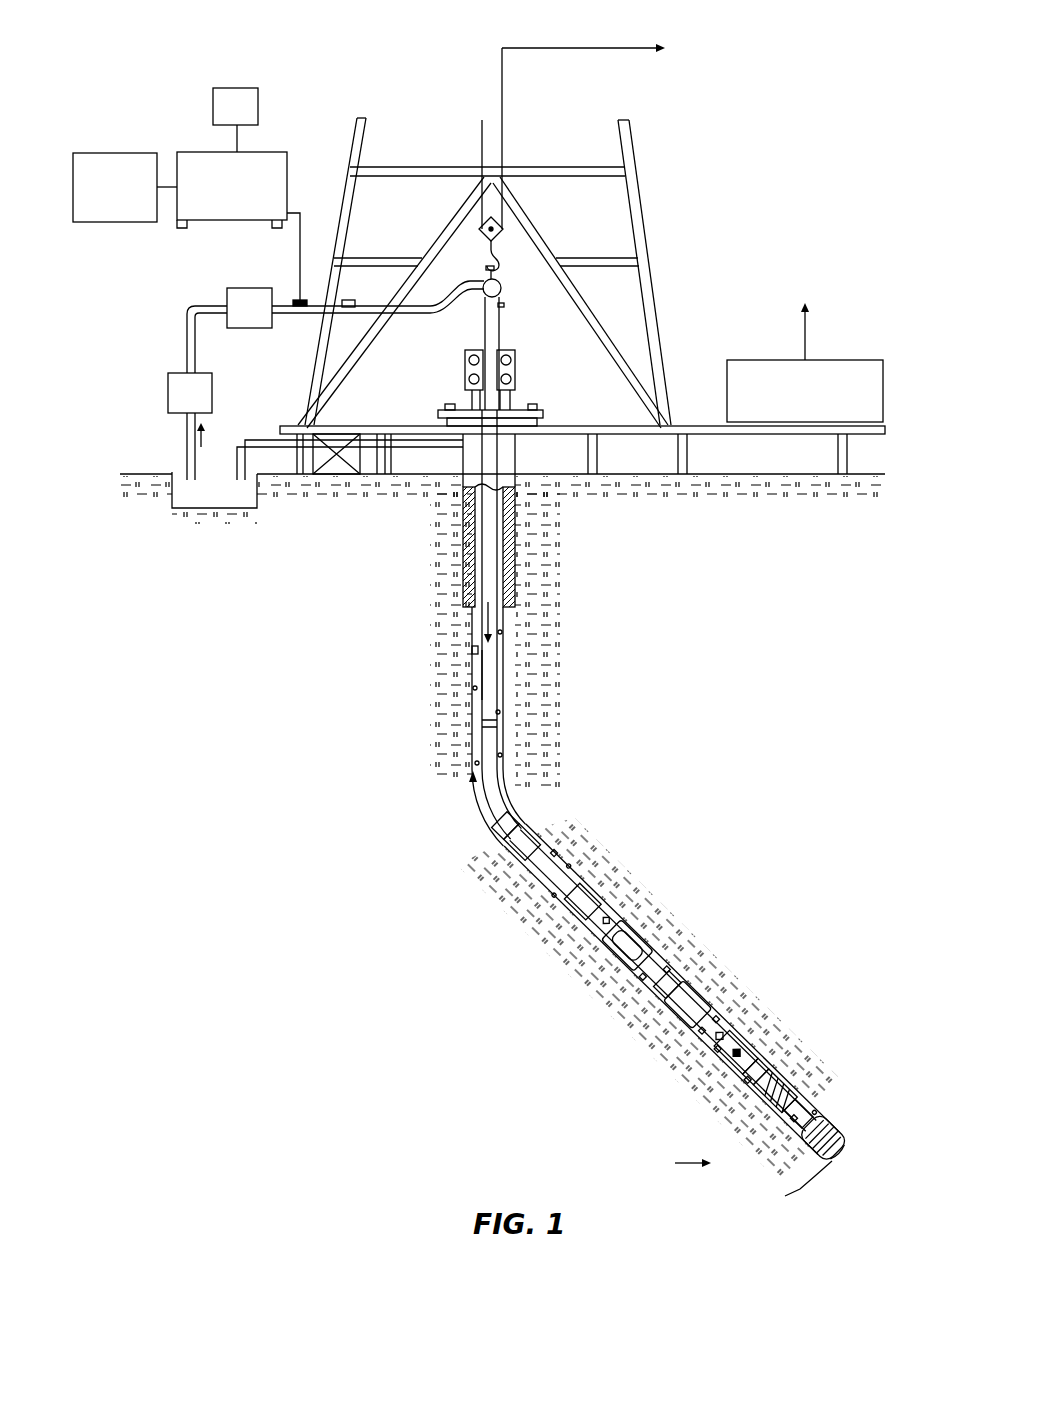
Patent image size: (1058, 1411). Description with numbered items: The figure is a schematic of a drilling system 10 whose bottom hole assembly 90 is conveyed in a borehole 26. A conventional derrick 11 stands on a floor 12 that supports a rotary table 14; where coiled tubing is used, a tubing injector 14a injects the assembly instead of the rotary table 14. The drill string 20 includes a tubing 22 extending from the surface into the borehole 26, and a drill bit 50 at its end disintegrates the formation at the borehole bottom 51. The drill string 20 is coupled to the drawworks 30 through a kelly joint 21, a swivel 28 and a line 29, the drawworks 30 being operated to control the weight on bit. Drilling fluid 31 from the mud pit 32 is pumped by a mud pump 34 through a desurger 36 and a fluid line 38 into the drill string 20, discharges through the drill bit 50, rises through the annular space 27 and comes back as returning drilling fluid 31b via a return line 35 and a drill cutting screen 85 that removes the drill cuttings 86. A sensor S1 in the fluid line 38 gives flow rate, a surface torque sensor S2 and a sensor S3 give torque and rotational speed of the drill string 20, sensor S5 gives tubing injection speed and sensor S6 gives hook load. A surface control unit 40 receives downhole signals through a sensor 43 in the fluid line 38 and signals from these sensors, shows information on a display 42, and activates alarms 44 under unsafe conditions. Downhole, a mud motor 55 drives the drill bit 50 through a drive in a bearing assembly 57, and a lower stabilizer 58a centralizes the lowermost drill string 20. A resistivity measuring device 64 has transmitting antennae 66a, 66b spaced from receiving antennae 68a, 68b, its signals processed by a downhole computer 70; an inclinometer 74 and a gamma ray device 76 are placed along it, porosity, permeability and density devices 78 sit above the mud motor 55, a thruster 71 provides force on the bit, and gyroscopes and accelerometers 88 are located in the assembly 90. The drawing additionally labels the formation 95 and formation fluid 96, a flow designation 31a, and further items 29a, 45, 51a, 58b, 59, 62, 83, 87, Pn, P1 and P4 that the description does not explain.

The drilling system 10 is at (424, 59).
The derrick 11 is at (650, 273).
The floor 12 is at (683, 427).
The rotary table 14 is at (515, 408).
The tubing injector 14a is at (515, 372).
The drill string 20 is at (507, 697).
The kelly joint 21 is at (500, 333).
The tubing 22 is at (483, 680).
The borehole 26 is at (507, 787).
The annular space 27 is at (545, 812).
The swivel 28 is at (487, 297).
The line 29 is at (503, 147).
The stabilizer sleeve 29a is at (650, 930).
The drawworks 30 is at (860, 360).
The drilling fluid 31 is at (178, 485).
The mud flow down 31a is at (488, 627).
The returning drilling fluid 31b is at (471, 782).
The mud pit 32 is at (237, 502).
The mud pump 34 is at (185, 382).
The return line 35 is at (391, 478).
The desurger 36 is at (227, 290).
The fluid line 38 is at (300, 313).
The surface control unit 40 is at (203, 152).
The display/monitor 42 is at (240, 88).
The sensor 43 is at (302, 300).
The alarms 44 is at (137, 223).
The signal line 45 is at (293, 213).
The drill bit 50 is at (852, 1126).
The borehole bottom 51 is at (795, 1192).
The bit face 51a is at (852, 1147).
The downhole motor 55 is at (575, 866).
The bearing assembly 57 is at (812, 1080).
The lower stabilizer 58a is at (815, 1098).
The sensor 58b is at (618, 948).
The sensor sub 59 is at (800, 1115).
The stabilizer 62 is at (628, 905).
The resistivity measuring device 64 is at (705, 1030).
The transmitting antenna 66a is at (643, 965).
The transmitting antenna 66b is at (715, 1056).
The receiving antenna 68a is at (690, 995).
The receiving antenna 68b is at (704, 988).
The downhole computer 70 is at (507, 823).
The thruster 71 is at (750, 1080).
The inclinometer 74 is at (735, 1020).
The gamma ray device 76 is at (763, 1045).
The formation porosity, permeability and density measuring devices 78 is at (500, 817).
The sensor 83 is at (660, 982).
The drill cutting screen 85 is at (333, 427).
The drill cuttings 86 is at (502, 753).
The casing 87 is at (513, 577).
The gyroscopes and accelerometers 88 is at (770, 1064).
The bottom hole assembly 90 is at (722, 870).
The formation 95 is at (532, 828).
The formation fluid 96 is at (652, 1164).
The pressure sensor Pn is at (473, 648).
The pressure sensor P1 is at (835, 1110).
The pressure sensor P4 is at (563, 855).
The flow rate sensor S1 is at (348, 300).
The surface torque sensor S2 is at (538, 408).
The rotational speed sensor S3 is at (447, 405).
The tubing injection speed sensor S5 is at (502, 307).
The hook load sensor S6 is at (487, 273).